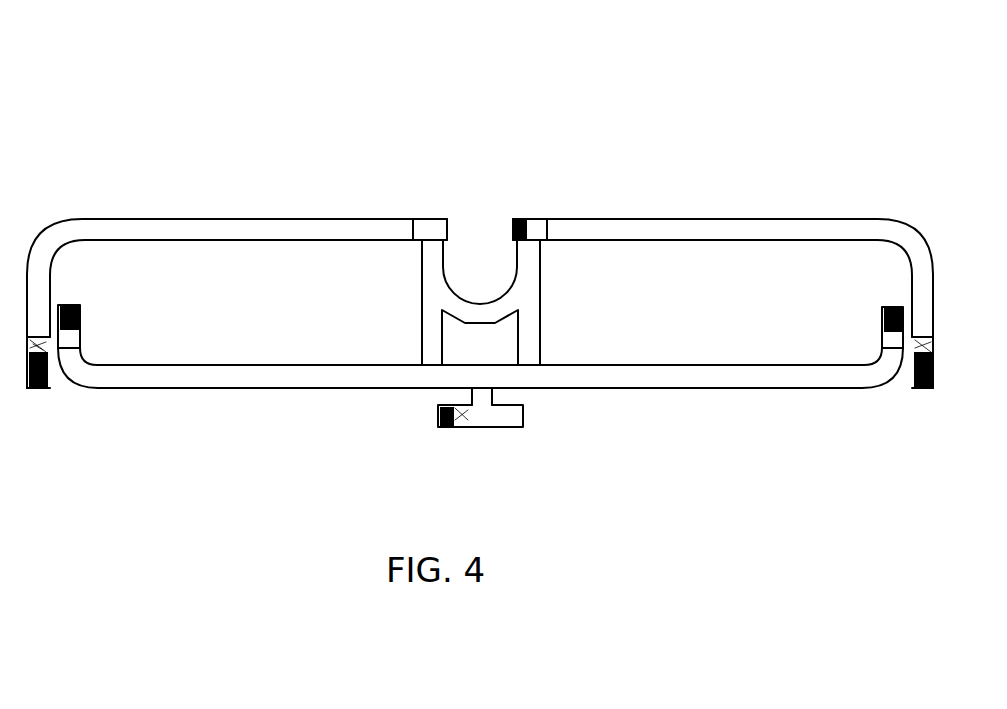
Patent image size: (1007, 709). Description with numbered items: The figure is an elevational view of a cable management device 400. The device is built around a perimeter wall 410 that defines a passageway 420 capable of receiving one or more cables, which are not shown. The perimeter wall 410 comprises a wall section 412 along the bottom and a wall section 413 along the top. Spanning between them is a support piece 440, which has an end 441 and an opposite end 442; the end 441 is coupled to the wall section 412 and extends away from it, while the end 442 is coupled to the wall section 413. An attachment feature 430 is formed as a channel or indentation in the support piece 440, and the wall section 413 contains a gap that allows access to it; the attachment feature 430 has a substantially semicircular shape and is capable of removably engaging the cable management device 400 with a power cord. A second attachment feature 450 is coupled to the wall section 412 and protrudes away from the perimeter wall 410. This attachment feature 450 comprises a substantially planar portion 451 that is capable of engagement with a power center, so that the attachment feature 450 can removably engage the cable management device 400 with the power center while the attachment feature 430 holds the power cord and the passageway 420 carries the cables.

The cable management device 400 is at (240, 86).
The perimeter wall 410 is at (641, 210).
The wall section 412 is at (740, 380).
The wall section 413 is at (196, 236).
The passageway 420 is at (720, 330).
The attachment feature 430 is at (483, 238).
The support piece 440 is at (430, 334).
The end 441 is at (547, 361).
The end 442 is at (547, 248).
The attachment feature 450 is at (412, 412).
The substantially planar portion 451 is at (455, 428).